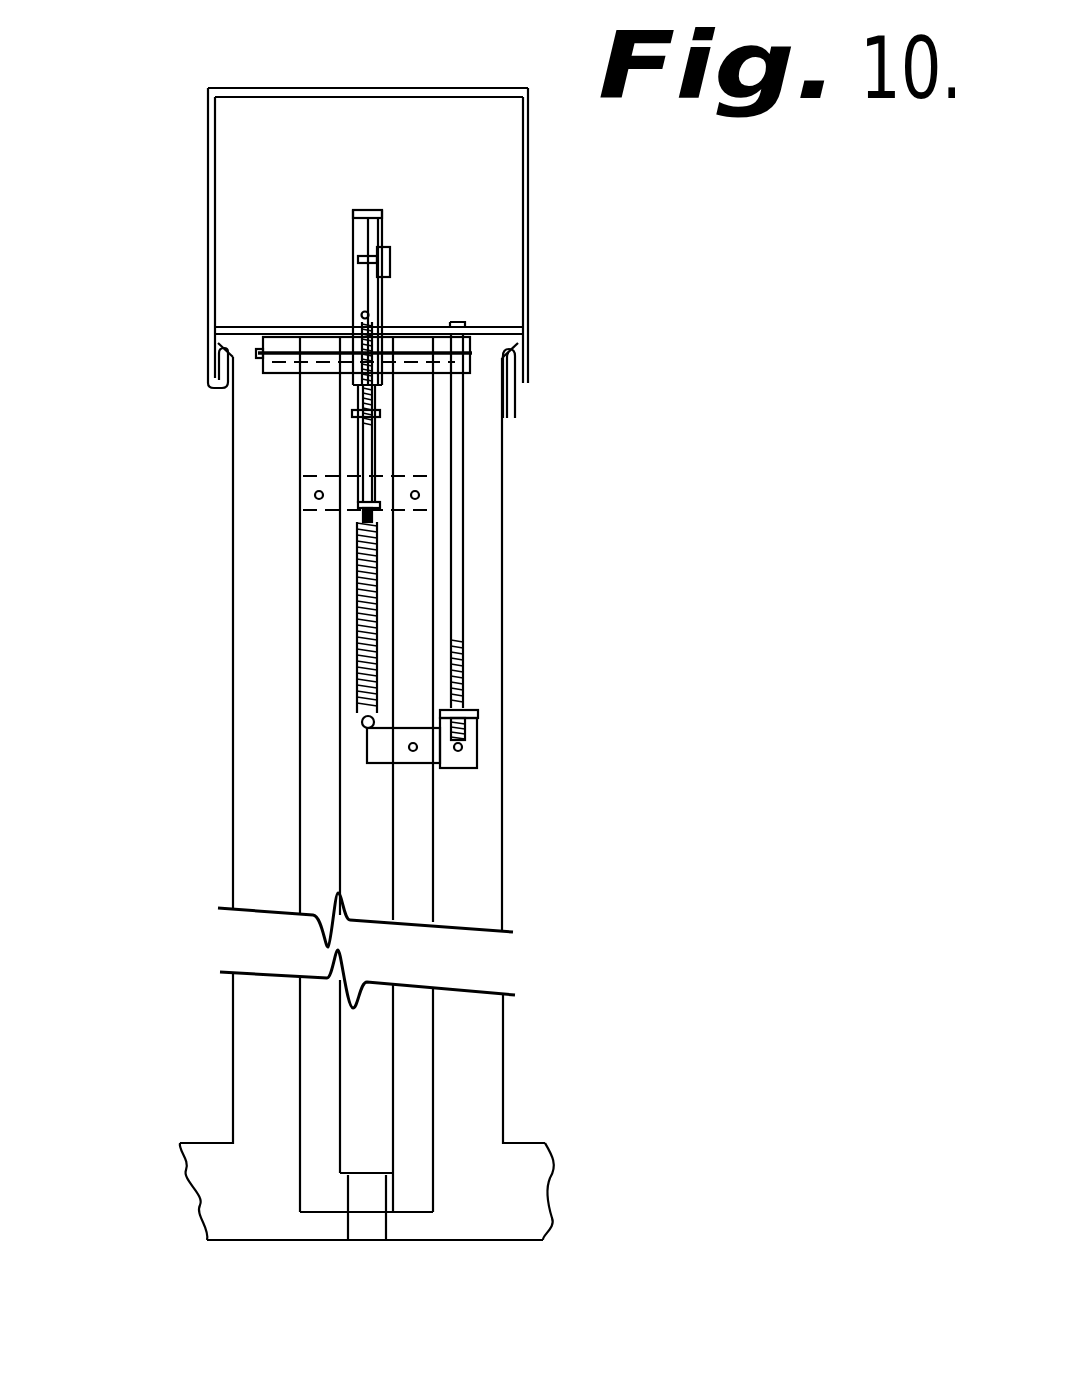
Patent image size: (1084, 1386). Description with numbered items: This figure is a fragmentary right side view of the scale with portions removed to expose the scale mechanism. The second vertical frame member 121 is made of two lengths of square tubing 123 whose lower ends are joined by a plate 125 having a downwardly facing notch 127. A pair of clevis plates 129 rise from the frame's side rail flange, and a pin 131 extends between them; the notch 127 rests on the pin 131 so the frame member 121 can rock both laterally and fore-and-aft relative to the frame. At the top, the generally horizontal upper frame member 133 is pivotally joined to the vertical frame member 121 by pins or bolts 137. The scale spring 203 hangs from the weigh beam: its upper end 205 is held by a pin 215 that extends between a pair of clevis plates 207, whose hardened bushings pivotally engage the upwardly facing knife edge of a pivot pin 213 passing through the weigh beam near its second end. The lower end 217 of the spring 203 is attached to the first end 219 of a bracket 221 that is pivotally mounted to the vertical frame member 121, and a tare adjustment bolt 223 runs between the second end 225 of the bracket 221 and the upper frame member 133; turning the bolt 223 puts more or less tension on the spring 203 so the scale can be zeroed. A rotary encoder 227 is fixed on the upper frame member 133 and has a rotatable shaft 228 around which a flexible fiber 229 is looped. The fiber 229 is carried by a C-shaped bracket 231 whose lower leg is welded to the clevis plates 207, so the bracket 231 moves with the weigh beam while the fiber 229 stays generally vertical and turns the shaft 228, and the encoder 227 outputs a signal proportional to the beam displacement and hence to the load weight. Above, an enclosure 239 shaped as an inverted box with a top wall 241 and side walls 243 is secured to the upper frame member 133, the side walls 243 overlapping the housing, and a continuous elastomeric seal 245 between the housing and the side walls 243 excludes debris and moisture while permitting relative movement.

The second vertical frame member 121 is at (433, 873).
The square tubing 123 is at (300, 1038).
The plate 125 is at (393, 1173).
The notch 127 is at (367, 1207).
The clevis plates 129 is at (387, 1225).
The pin 131 is at (365, 1200).
The upper frame member 133 is at (412, 337).
The pins or bolts 137 is at (473, 352).
The scale spring 203 is at (357, 622).
The upper end of scale spring 205 is at (357, 513).
The clevis plates 207 is at (357, 452).
The pivot pin 213 is at (380, 412).
The pin 215 is at (382, 505).
The lower end of spring 217 is at (362, 722).
The first end of bracket 219 is at (367, 748).
The bracket 221 is at (407, 764).
The tare adjustment bolt 223 is at (466, 630).
The second end of bracket 225 is at (480, 745).
The rotary encoder 227 is at (390, 262).
The rotatable shaft 228 is at (363, 263).
The flexible fiber 229 is at (373, 236).
The C-shaped bracket 231 is at (368, 210).
The enclosure 239 is at (388, 191).
The top wall 241 is at (328, 88).
The side walls 243 is at (208, 143).
The elastomeric seal 245 is at (210, 339).